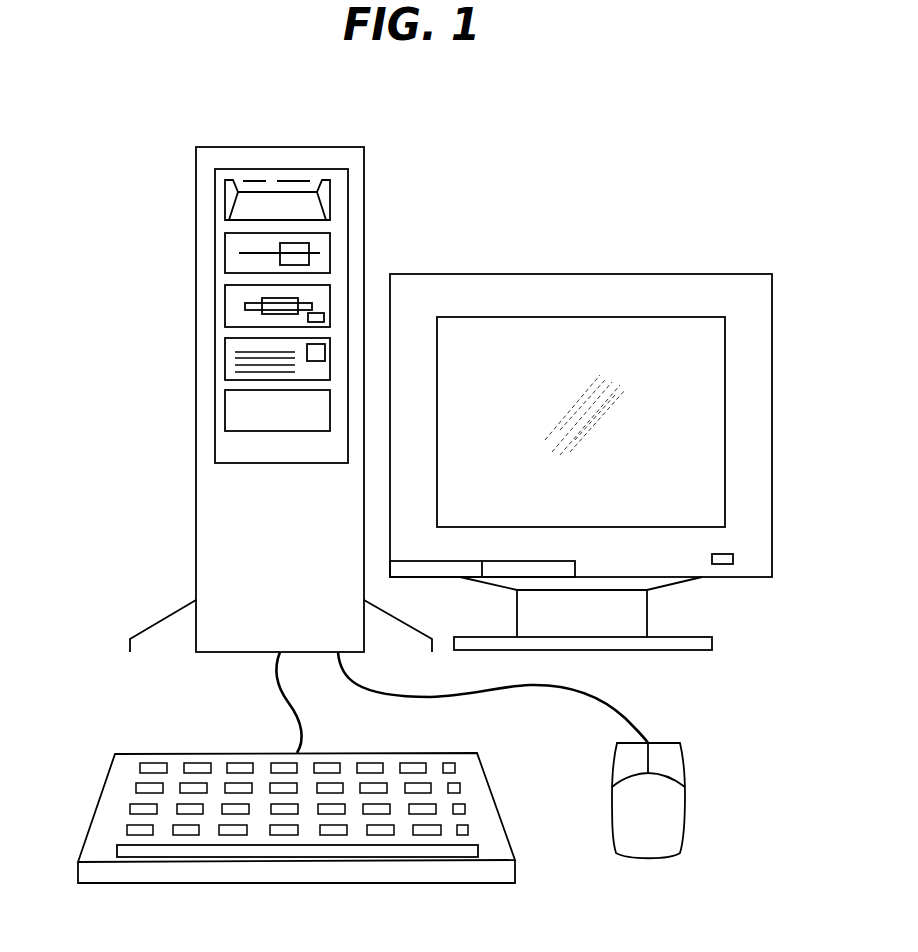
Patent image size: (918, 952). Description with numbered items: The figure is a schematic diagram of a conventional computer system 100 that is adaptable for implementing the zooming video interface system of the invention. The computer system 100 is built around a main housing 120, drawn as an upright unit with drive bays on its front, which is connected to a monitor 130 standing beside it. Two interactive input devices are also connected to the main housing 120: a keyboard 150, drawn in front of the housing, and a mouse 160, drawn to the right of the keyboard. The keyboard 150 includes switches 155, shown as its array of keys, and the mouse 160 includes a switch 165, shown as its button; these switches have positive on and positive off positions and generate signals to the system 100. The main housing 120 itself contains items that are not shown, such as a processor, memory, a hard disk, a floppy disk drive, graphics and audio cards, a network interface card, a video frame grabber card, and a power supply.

The computer system 100 is at (593, 185).
The main housing 120 is at (284, 147).
The monitor 130 is at (773, 401).
The keyboard 150 is at (93, 811).
The switches 155 is at (327, 812).
The mouse 160 is at (686, 765).
The switches 165 is at (624, 765).